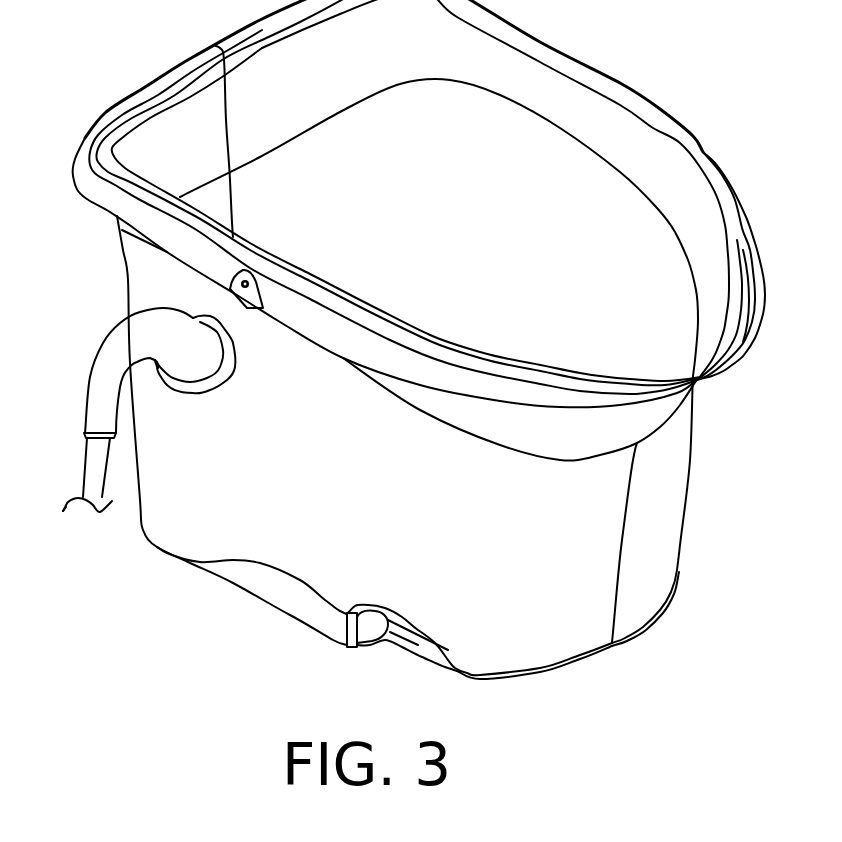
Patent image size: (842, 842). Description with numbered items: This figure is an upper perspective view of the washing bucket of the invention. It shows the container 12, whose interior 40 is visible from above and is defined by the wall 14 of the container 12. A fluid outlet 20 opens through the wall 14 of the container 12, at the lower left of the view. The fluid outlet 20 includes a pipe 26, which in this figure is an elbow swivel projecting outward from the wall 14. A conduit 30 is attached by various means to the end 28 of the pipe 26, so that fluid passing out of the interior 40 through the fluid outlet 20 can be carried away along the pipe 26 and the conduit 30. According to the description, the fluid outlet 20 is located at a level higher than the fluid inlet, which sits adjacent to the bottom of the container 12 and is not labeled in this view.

The container 12 is at (673, 460).
The wall 14 is at (341, 486).
The fluid outlet 20 is at (219, 385).
The pipe 26 is at (115, 343).
The end 28 is at (84, 434).
The conduit 30 is at (90, 472).
The interior 40 is at (435, 236).